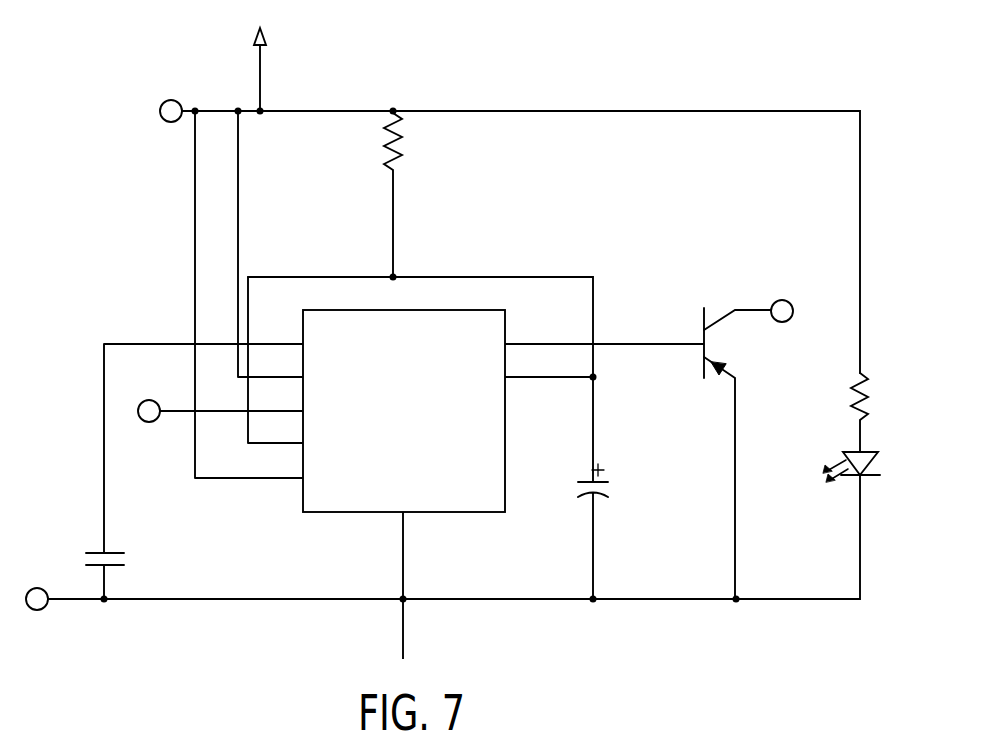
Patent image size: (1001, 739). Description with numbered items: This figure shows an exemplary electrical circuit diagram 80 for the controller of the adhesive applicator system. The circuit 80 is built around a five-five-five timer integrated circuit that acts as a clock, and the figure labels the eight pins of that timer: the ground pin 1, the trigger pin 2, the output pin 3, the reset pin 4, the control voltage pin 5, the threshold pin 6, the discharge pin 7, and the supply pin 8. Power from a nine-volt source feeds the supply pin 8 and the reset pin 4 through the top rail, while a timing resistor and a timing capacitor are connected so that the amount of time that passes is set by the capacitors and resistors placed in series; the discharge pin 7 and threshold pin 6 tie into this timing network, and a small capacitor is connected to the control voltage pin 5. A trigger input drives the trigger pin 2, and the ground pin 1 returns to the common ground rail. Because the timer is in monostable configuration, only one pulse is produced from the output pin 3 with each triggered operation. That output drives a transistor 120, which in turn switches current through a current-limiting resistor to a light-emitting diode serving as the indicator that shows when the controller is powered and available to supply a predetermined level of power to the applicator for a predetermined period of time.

The electrical circuit diagram 80 is at (90, 160).
The transistor Q 120 is at (731, 434).
The GND pin of timer U 1 is at (405, 570).
The TRIG pin of timer U 2 is at (256, 404).
The OUT pin of timer U 3 is at (582, 336).
The RST pin of timer U 4 is at (292, 370).
The CY pin of timer U 5 is at (219, 337).
The THR pin of timer U 6 is at (297, 439).
The DISCHG pin of timer U 7 is at (513, 371).
The Y+ pin of timer U 8 is at (264, 471).